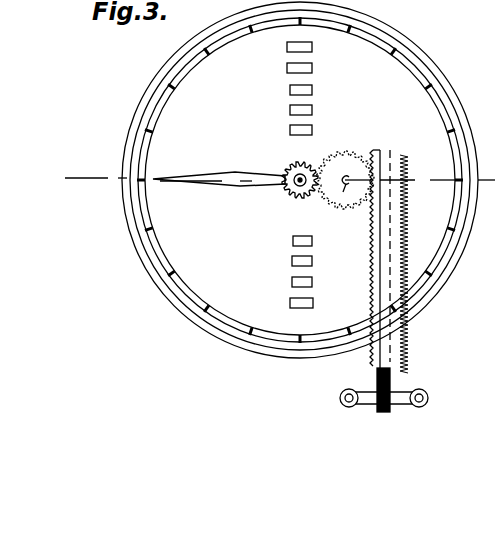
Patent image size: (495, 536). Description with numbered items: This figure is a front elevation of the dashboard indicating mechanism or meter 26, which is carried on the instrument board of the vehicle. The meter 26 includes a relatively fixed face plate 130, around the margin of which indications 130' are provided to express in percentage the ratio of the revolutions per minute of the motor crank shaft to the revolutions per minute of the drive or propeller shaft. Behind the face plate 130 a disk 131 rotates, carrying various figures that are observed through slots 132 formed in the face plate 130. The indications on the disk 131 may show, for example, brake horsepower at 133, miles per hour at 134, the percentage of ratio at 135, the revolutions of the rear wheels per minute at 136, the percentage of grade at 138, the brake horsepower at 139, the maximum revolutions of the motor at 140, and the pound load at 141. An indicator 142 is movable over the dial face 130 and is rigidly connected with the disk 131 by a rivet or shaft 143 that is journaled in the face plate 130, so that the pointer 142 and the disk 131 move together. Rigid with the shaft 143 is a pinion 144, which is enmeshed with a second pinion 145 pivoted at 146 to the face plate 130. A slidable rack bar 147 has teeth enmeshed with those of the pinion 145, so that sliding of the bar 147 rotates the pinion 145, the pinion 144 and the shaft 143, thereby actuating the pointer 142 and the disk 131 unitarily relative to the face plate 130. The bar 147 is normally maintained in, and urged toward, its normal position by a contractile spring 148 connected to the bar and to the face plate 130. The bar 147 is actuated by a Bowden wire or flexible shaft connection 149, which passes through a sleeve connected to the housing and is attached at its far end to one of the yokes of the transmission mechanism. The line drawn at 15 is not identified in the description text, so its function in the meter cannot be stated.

The input line 15 is at (72, 196).
The indicating mechanism or meter 26 is at (144, 82).
The face plate 130 is at (313, 180).
The indications 130' is at (300, 180).
The disk 131 is at (312, 43).
The slots 132 is at (287, 52).
The brake horsepower indication 133 is at (312, 132).
The miles per hour indication 134 is at (312, 111).
The percentage of ratio indication 135 is at (312, 91).
The rear wheel revolutions indication 136 is at (312, 70).
The percentage of grade indication 138 is at (312, 242).
The brake horsepower indication 139 is at (312, 262).
The maximum motor revolutions indication 140 is at (312, 283).
The pound load indication 141 is at (313, 303).
The indicator 142 is at (216, 173).
The rivet or shaft 143 is at (296, 175).
The pinion 144 is at (309, 164).
The pinion 145 is at (361, 163).
The pivot 146 is at (340, 193).
The slidable rack bar 147 is at (381, 151).
The contractile spring 148 is at (406, 226).
The Bowden wire or flexible shaft connection 149 is at (395, 392).